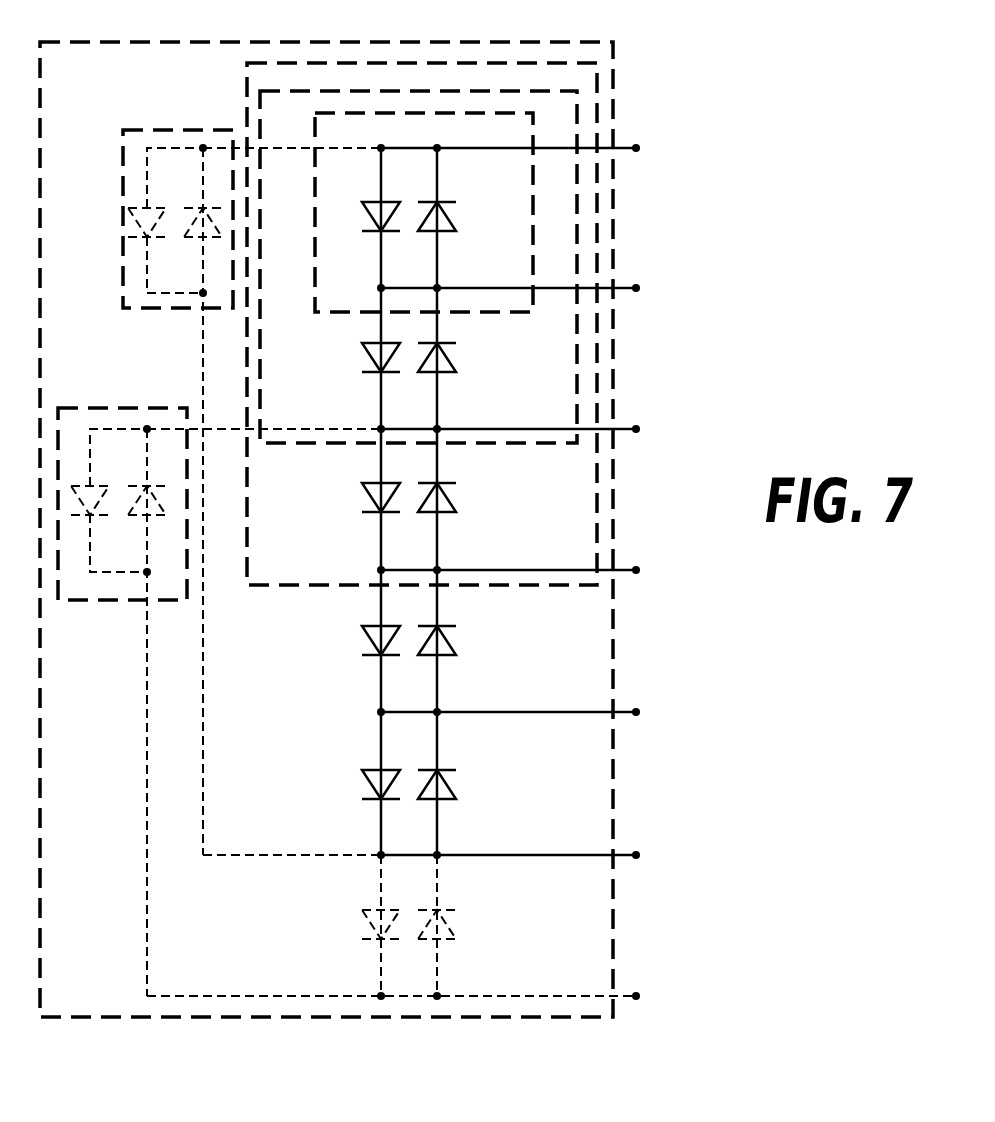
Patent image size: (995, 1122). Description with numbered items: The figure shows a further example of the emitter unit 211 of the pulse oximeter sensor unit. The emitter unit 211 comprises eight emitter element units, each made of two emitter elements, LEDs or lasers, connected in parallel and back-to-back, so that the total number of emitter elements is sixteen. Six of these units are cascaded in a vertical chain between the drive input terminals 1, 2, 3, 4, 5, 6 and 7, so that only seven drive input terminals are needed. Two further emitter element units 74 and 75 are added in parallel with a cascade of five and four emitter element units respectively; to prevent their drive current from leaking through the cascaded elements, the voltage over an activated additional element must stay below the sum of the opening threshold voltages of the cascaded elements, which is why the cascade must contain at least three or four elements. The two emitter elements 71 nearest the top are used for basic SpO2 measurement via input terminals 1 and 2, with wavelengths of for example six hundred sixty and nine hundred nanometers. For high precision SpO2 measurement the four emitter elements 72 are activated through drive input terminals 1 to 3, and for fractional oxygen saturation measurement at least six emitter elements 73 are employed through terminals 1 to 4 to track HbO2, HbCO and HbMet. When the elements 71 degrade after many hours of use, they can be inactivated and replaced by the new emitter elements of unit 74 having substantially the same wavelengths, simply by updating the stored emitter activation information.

The emitter unit 211 is at (326, 508).
The emitter elements for basic SpO2 measurement 71 is at (424, 245).
The emitter elements for high precision SpO2 measurement 72 is at (418, 300).
The emitter elements for fractional oxygen saturation measurement 73 is at (422, 357).
The emitter element unit 74 is at (178, 464).
The emitter element unit 75 is at (122, 674).
The drive input terminal 1 is at (424, 129).
The drive input terminal 2 is at (511, 269).
The drive input terminal 3 is at (394, 411).
The drive input terminal 4 is at (511, 552).
The drive input terminal 5 is at (511, 694).
The drive input terminal 6 is at (422, 837).
The drive input terminal 7 is at (394, 979).